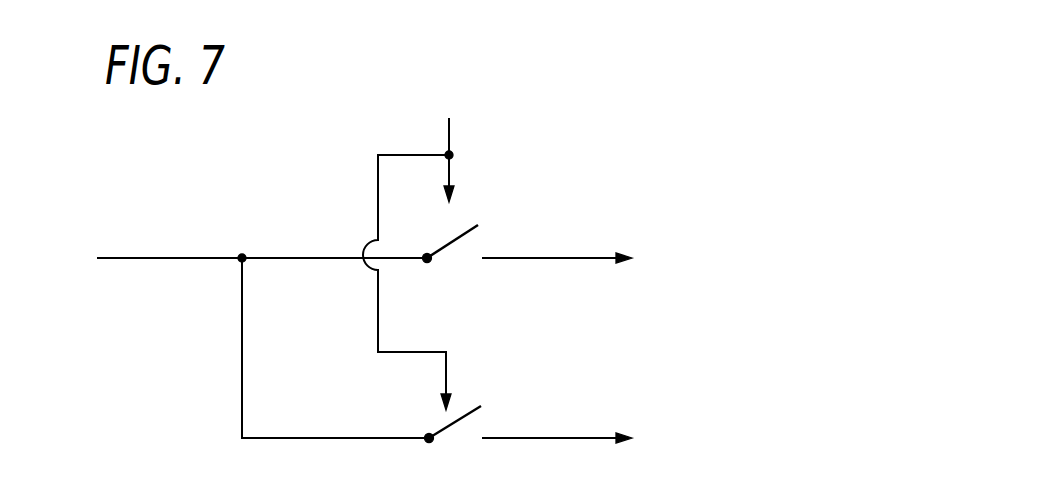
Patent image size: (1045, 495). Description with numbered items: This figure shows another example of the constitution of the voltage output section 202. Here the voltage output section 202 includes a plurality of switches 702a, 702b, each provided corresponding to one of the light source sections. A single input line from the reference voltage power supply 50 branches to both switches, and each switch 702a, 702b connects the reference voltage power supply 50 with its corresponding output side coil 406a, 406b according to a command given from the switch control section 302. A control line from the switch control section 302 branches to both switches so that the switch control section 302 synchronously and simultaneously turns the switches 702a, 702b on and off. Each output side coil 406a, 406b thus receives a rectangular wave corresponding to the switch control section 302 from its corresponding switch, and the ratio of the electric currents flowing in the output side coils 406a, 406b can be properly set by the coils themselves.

The voltage output section 202 is at (632, 173).
The reference voltage power supply 50 is at (240, 340).
The switch control section 302 is at (419, 250).
The switch 702a is at (478, 223).
The switch 702b is at (477, 406).
The output side coil 406a is at (593, 258).
The output side coil 406b is at (593, 438).